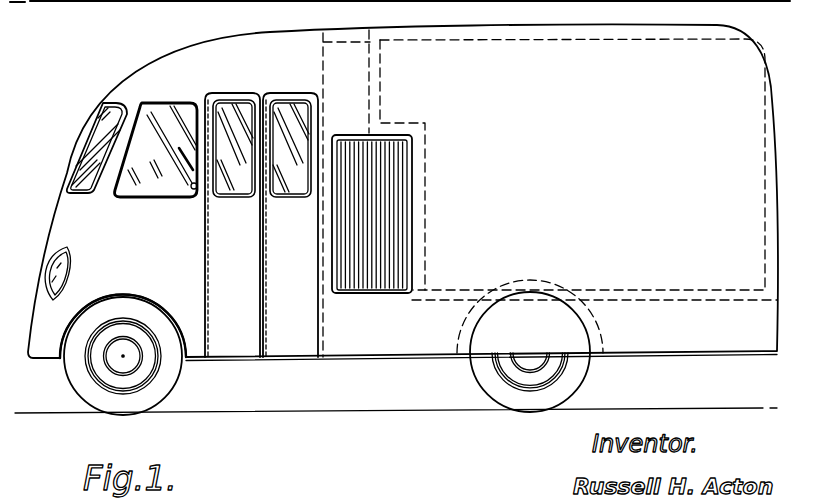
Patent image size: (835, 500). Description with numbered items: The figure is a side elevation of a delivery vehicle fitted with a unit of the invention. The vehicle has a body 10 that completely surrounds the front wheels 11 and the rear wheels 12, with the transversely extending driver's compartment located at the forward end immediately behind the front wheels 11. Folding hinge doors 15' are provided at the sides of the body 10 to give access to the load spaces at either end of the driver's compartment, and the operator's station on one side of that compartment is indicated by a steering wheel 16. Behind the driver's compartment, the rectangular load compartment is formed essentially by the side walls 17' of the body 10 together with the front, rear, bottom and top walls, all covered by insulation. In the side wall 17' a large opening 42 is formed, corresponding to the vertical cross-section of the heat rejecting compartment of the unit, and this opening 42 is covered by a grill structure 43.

The body 10 is at (403, 184).
The front wheels 11 is at (72, 383).
The rear wheels 12 is at (582, 377).
The folding hinge doors 15' is at (232, 225).
The steering wheel 16 is at (192, 158).
The side walls 17' is at (550, 193).
The large opening 42 is at (362, 326).
The grill structure 43 is at (402, 209).